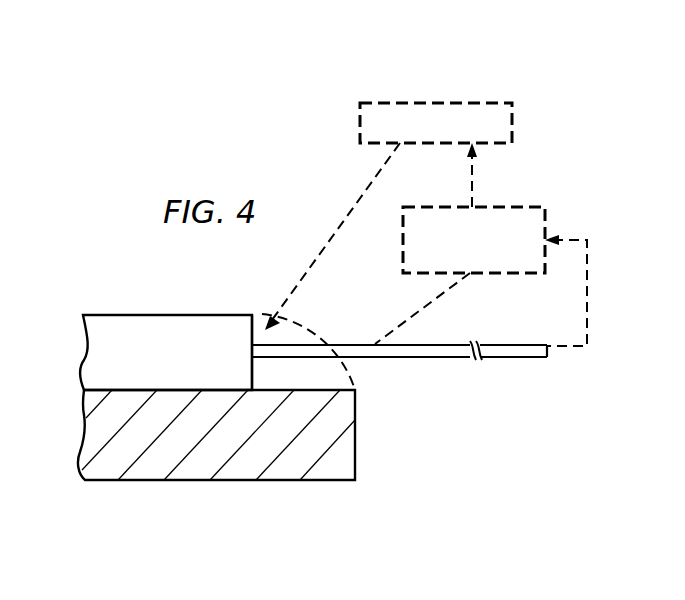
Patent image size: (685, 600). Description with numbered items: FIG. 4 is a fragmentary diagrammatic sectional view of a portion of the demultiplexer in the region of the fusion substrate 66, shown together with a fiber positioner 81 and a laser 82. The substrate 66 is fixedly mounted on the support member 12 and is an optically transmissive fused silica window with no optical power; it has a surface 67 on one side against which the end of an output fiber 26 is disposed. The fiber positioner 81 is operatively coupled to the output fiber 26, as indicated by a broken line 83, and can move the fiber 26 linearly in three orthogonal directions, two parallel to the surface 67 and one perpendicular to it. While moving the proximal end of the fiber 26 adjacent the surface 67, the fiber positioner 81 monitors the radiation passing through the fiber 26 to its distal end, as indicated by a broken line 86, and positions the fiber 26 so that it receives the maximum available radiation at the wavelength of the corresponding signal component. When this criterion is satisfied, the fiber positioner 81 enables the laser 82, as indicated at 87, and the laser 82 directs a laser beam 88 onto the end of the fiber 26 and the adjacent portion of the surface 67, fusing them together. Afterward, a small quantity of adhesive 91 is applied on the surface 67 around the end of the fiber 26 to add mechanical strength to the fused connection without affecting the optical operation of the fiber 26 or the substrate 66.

The support member 12 is at (355, 450).
The output fiber 26 is at (412, 358).
The fusion substrate 66 is at (153, 366).
The surface 67 is at (262, 314).
The fiber positioner 81 is at (495, 273).
The laser 82 is at (512, 122).
The broken line 83 is at (407, 322).
The broken line 86 is at (587, 300).
The enable indication 87 is at (472, 185).
The laser beam 88 is at (347, 220).
The adhesive 91 is at (310, 332).